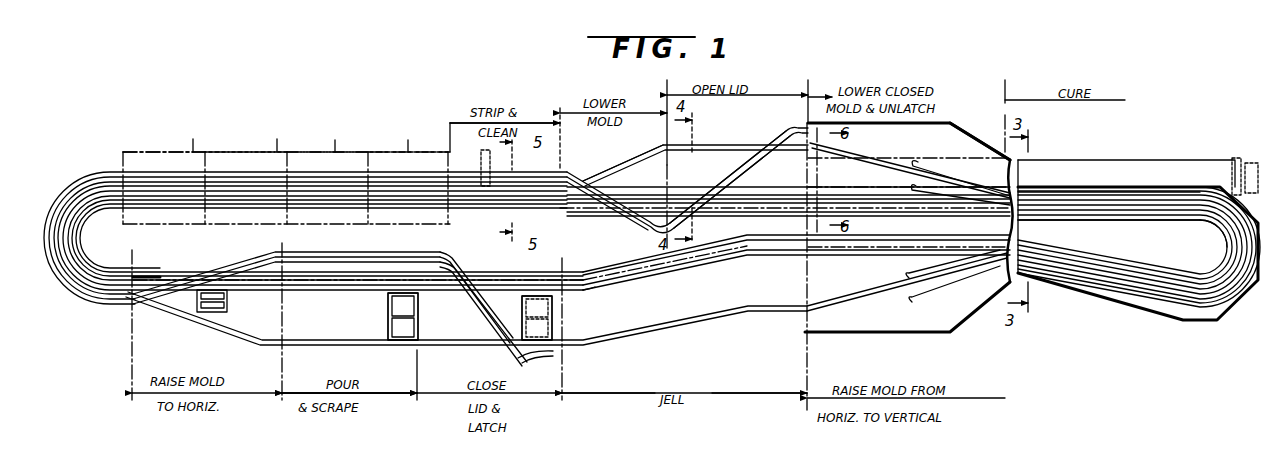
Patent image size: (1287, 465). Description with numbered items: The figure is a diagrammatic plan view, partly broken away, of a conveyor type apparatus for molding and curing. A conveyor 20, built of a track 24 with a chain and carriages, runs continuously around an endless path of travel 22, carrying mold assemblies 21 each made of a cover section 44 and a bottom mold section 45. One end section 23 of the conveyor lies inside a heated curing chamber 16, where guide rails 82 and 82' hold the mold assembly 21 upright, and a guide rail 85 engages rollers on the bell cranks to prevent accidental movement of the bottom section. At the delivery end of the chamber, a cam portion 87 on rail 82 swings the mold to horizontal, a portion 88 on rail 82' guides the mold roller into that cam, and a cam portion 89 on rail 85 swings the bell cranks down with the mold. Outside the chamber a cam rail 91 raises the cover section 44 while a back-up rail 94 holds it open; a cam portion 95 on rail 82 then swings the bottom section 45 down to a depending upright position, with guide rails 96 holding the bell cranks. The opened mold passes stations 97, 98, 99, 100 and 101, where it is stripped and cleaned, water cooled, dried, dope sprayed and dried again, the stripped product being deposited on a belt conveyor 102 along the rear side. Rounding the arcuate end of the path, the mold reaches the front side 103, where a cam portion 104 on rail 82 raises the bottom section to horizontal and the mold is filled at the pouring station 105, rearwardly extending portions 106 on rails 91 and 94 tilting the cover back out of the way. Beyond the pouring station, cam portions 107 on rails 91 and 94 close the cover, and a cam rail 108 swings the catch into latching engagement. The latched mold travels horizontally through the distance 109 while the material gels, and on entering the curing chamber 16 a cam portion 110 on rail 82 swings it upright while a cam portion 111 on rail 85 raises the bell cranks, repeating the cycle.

The curing chamber 16 is at (927, 337).
The conveyor 20 is at (731, 256).
The mold assembly 21 is at (229, 304).
The endless path of travel 22 is at (118, 309).
The end section of the conveyor 23 is at (1212, 313).
The track 24 is at (1146, 222).
The cover section 44 is at (554, 311).
The bottom mold section 45 is at (391, 310).
The guide rail 82 is at (1139, 235).
The guide rail 82' is at (1193, 239).
The guide rail 85 is at (1103, 192).
The cam portion 87 is at (896, 164).
The portion of rail 88 is at (931, 184).
The cam portion 89 is at (954, 171).
The cam rail 91 is at (750, 180).
The back-up rail 94 is at (782, 152).
The cam portion 95 is at (615, 160).
The guide rails 96 is at (576, 210).
The station 97 is at (495, 108).
The station 98 is at (408, 139).
The station 99 is at (327, 139).
The station 100 is at (248, 138).
The station 101 is at (168, 138).
The conveyor 102 is at (577, 165).
The front side of the apparatus 103 is at (326, 296).
The cam portion 104 is at (228, 333).
The pouring station 105 is at (372, 414).
The rearwardly extending portions 106 is at (262, 263).
The cam portions 107 is at (478, 318).
The cam rail 108 is at (541, 356).
The distance 109 is at (715, 398).
The cam portion 110 is at (850, 307).
The cam portion 111 is at (955, 285).